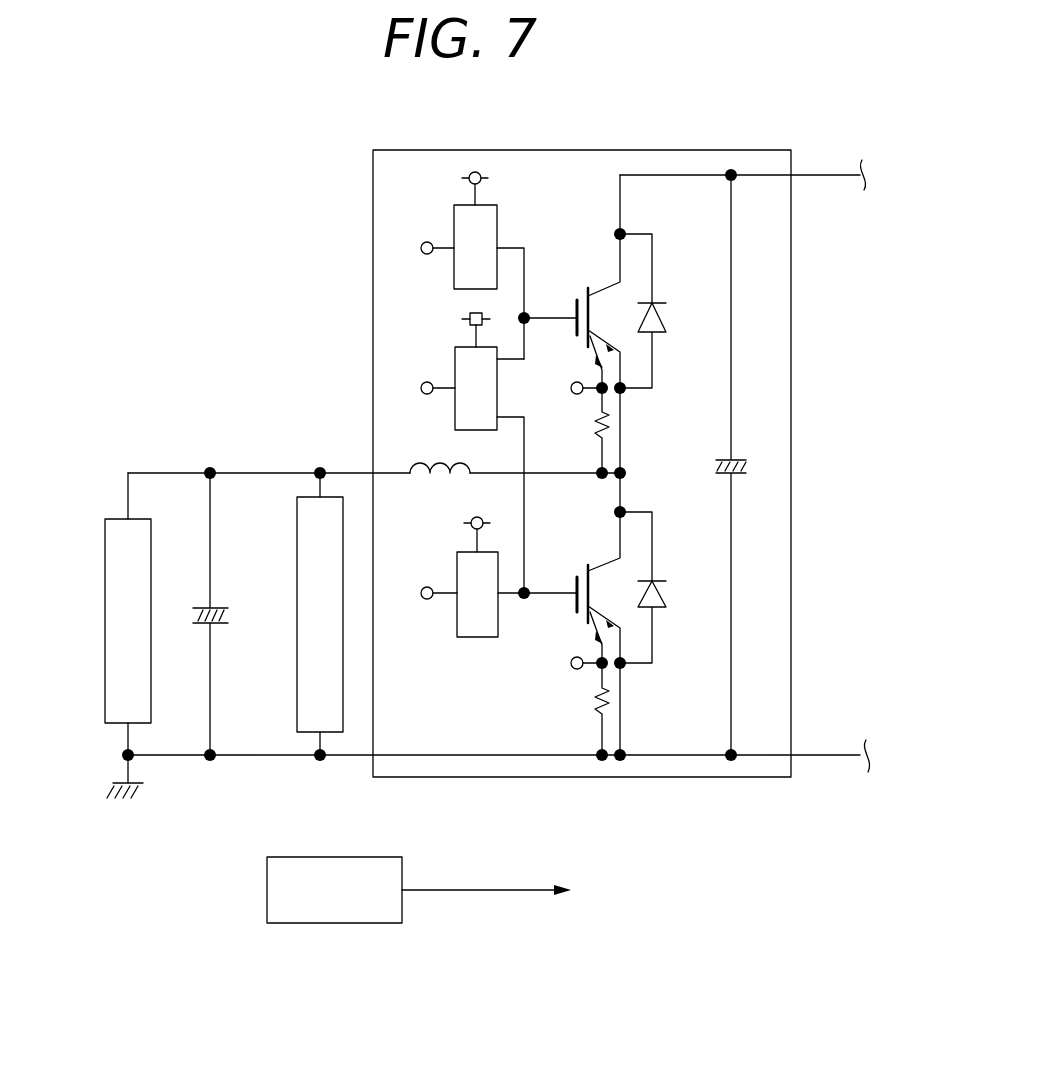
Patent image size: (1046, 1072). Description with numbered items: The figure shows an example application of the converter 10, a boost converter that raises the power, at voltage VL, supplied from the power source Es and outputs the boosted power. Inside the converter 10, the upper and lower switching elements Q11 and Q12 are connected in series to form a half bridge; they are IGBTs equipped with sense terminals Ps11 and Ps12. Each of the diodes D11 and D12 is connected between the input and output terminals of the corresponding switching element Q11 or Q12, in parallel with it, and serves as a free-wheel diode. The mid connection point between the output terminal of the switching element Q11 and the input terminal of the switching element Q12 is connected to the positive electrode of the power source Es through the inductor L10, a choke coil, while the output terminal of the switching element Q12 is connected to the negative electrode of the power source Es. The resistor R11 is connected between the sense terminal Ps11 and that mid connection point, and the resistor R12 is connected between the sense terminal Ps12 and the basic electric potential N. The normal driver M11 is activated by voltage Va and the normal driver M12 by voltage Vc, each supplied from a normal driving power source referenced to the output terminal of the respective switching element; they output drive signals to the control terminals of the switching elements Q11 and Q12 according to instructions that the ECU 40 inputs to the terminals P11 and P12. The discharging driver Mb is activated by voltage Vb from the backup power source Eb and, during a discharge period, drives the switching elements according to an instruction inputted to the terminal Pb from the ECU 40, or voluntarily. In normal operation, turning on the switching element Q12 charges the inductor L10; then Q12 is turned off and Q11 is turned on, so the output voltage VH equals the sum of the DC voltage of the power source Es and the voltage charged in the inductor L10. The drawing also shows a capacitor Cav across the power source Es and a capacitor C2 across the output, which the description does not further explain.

The converter 10 is at (562, 150).
The ECU 40 is at (328, 857).
The normal driver M11 is at (498, 224).
The normal driver M12 is at (470, 637).
The discharging driver Mb is at (455, 357).
The switching element Q11 is at (575, 281).
The switching element Q12 is at (596, 584).
The diode D11 is at (660, 311).
The diode D12 is at (661, 587).
The resistor R11 is at (576, 430).
The resistor R12 is at (578, 709).
The sense terminal Ps11 is at (580, 373).
The sense terminal Ps12 is at (580, 648).
The terminal P11 is at (424, 231).
The terminal P12 is at (427, 576).
The terminal Pb is at (429, 372).
The voltage Va is at (456, 184).
The voltage Vb is at (457, 325).
The voltage Vc is at (457, 530).
The inductor L10 is at (434, 449).
The smoothing capacitor C2 is at (743, 462).
The capacitor Cav is at (227, 614).
The power source Es is at (105, 565).
The backup power source Eb is at (297, 548).
The voltage VL is at (377, 460).
The output voltage VH is at (743, 163).
The basic electric potential N is at (125, 796).